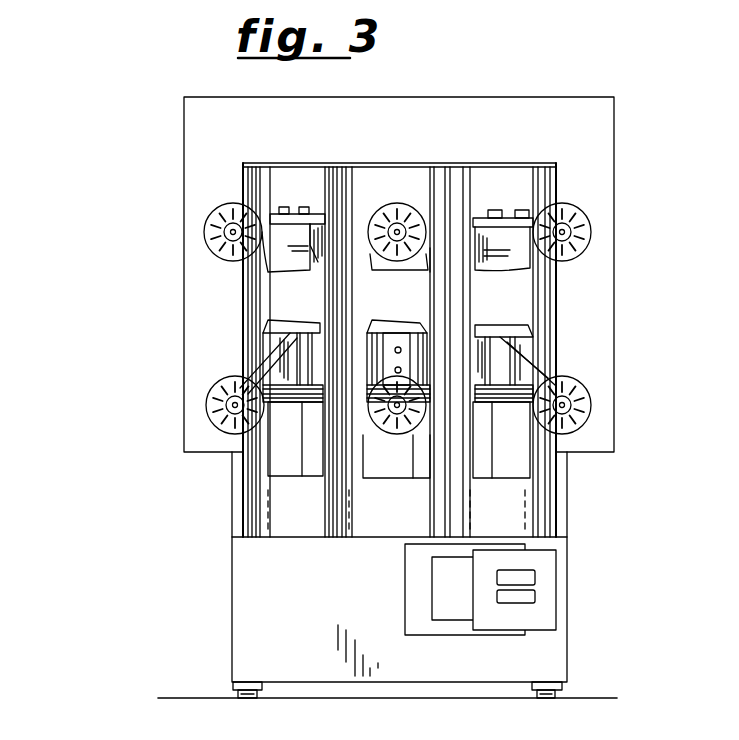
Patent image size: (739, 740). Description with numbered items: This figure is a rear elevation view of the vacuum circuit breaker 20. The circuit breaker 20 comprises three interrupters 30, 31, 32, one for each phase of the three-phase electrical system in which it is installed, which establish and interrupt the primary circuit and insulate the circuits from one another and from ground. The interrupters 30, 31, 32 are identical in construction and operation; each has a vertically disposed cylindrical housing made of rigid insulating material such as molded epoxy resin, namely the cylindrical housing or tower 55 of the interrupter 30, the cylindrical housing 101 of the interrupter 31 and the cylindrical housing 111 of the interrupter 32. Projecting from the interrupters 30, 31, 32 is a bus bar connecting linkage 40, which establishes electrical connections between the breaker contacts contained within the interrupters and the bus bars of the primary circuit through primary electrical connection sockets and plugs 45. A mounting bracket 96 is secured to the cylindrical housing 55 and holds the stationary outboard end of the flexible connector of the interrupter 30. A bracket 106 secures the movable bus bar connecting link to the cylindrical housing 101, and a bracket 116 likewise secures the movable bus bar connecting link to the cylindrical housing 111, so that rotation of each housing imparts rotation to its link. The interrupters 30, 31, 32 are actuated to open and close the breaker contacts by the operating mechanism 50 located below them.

The circuit breaker 20 is at (131, 153).
The interrupter 30 is at (404, 172).
The interrupter 31 is at (299, 172).
The interrupter 32 is at (499, 170).
The bus bar connecting linkage 40 is at (199, 396).
The primary electrical connection sockets and plugs 45 is at (222, 268).
The operating mechanism 50 is at (298, 633).
The cylindrical housing or tower 55 is at (368, 538).
The mounting bracket 96 is at (388, 342).
The cylindrical housing 101 is at (310, 523).
The bracket 106 is at (283, 337).
The cylindrical housing 111 is at (512, 518).
The bracket 116 is at (538, 370).